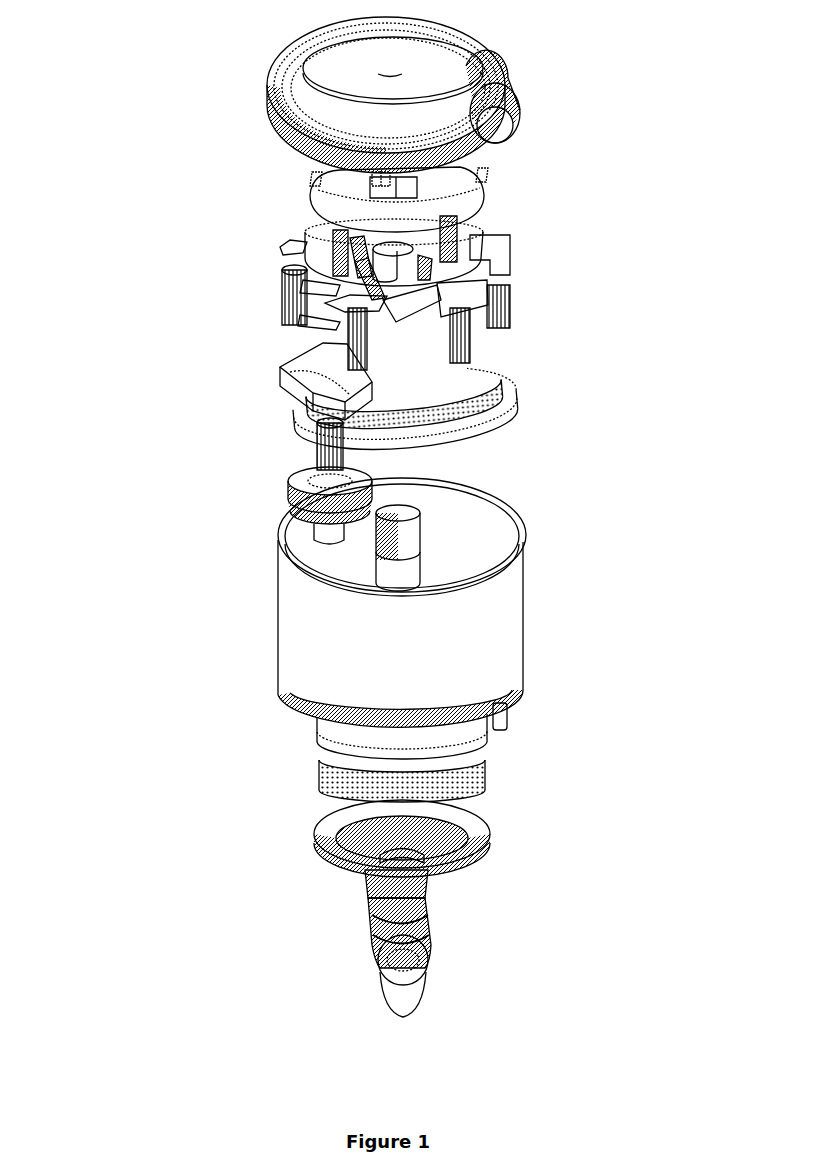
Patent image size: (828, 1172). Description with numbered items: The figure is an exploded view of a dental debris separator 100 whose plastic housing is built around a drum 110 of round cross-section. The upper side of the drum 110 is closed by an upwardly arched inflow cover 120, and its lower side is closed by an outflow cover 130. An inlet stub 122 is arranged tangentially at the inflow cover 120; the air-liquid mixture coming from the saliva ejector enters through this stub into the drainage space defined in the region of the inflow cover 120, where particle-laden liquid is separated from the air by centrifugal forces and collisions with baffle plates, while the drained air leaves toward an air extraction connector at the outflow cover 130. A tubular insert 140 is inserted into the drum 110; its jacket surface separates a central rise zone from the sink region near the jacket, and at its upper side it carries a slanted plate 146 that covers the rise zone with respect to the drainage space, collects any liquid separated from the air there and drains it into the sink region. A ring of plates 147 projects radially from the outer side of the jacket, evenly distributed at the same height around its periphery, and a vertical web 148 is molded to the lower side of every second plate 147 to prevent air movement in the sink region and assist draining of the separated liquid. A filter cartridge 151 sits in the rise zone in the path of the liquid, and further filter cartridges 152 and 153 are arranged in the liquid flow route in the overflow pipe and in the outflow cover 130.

The separator 100 is at (232, 96).
The drum 110 is at (378, 626).
The inflow cover 120 is at (515, 93).
The inlet stub 122 is at (505, 133).
The outflow cover 130 is at (405, 900).
The tubular insert 140 is at (332, 344).
The slanted plate 146 is at (380, 195).
The ring of plates 147 is at (480, 306).
The vertical web 148 is at (513, 372).
The filter cartridge 151 is at (315, 403).
The filter cartridge 152 is at (292, 507).
The filter cartridge 153 is at (322, 782).